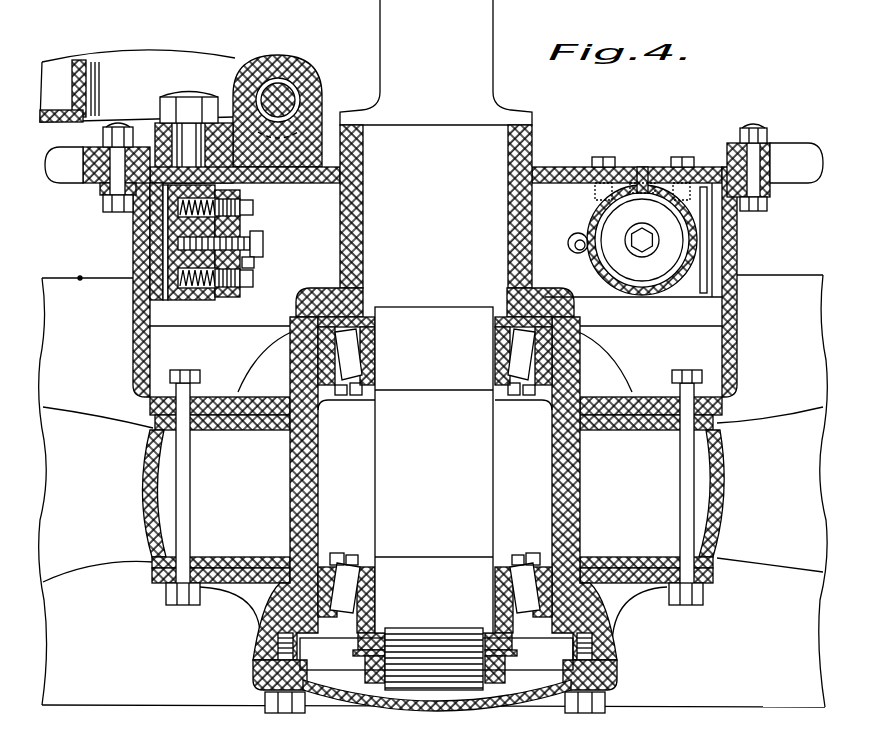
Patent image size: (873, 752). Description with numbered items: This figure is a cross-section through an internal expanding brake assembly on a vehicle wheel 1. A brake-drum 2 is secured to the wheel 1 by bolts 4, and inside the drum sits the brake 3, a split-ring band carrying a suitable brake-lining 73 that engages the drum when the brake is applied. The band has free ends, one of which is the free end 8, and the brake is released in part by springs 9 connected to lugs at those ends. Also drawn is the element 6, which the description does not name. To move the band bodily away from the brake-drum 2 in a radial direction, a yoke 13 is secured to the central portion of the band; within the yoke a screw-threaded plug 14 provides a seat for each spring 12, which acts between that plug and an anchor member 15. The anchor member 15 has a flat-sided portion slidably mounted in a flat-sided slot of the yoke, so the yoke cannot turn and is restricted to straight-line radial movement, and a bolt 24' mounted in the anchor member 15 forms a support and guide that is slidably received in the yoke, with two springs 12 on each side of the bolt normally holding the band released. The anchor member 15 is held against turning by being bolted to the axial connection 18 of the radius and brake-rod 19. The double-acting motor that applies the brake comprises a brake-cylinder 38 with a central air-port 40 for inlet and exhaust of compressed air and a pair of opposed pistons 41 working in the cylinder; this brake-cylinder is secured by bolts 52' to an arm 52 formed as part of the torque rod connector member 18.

The wheel 1 is at (779, 697).
The brake-drum 2 is at (737, 357).
The brake 3 is at (152, 236).
The bolts 4 is at (190, 487).
The dial indicator 6 is at (699, 252).
The free end of the brake band 8 is at (707, 285).
The springs 9 is at (568, 241).
The springs 12 is at (248, 203).
The yoke 13 is at (248, 263).
The screw-threaded plug 14 is at (252, 214).
The anchor member 15 is at (160, 260).
The axial connection 18 is at (528, 142).
The radius and brake-rod 19 is at (193, 57).
The bolt 24' is at (245, 239).
The brake-cylinder 38 is at (666, 283).
The central air-port 40 is at (648, 166).
The pistons 41 is at (625, 272).
The arm 52 is at (599, 159).
The bolts 52' is at (661, 156).
The brake-lining 73 is at (150, 290).